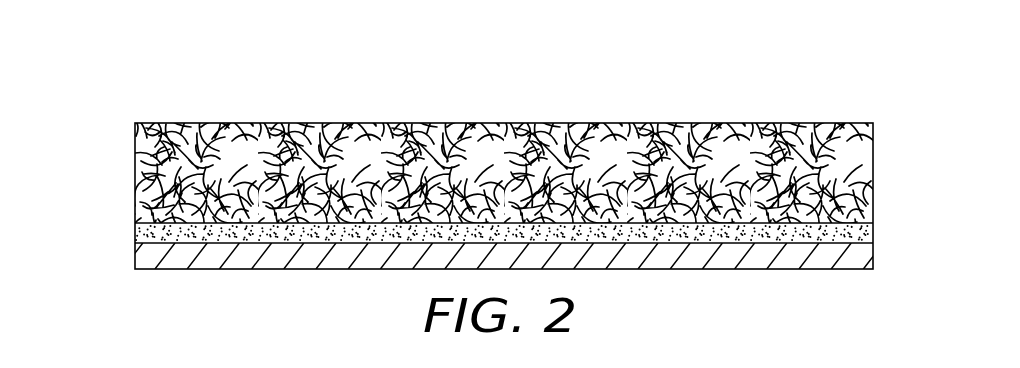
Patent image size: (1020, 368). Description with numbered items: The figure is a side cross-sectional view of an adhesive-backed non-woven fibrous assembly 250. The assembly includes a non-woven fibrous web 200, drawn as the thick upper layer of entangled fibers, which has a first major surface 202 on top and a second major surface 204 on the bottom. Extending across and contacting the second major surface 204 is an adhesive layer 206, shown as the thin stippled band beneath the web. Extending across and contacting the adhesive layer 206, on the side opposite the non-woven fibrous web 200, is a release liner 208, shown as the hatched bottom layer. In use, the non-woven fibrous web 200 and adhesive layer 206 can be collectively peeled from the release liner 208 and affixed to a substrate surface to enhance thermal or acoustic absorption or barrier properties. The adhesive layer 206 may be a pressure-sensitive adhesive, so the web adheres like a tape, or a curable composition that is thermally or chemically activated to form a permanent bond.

The non-woven fibrous web 200 is at (873, 186).
The first major surface 202 is at (756, 123).
The second major surface 204 is at (753, 224).
The adhesive layer 206 is at (142, 232).
The release liner 208 is at (148, 258).
The adhesive-backed non-woven fibrous assembly 250 is at (845, 39).